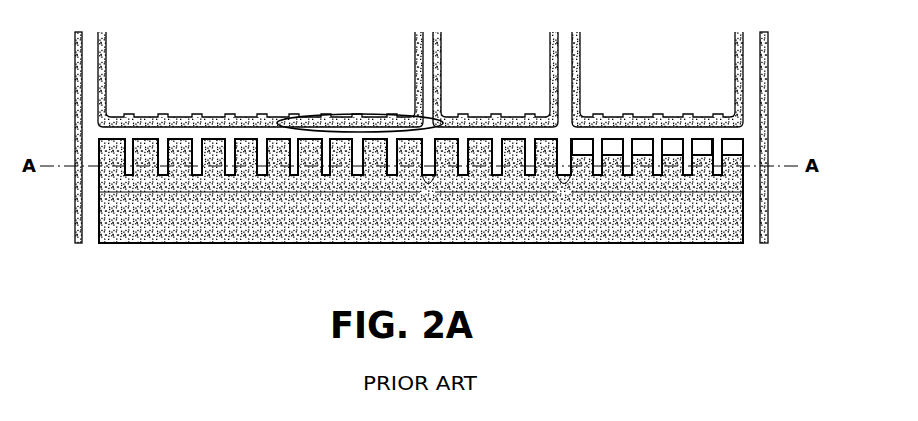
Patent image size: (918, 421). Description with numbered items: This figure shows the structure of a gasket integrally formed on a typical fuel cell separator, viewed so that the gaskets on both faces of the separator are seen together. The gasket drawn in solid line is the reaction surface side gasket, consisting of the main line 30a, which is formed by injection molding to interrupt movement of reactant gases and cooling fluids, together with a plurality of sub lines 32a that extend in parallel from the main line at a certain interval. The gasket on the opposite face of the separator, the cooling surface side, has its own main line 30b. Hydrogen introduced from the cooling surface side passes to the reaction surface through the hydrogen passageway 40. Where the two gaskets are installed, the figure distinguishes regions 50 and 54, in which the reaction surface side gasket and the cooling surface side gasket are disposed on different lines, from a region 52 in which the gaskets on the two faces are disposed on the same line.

The reaction surface side main line 30a is at (375, 114).
The cooling surface side main line 30b is at (245, 153).
The hydrogen passageway 40 is at (643, 147).
The sub line 32a is at (464, 178).
The region where the gasket is disposed on different lines 50 is at (262, 192).
The region where the gasket is disposed on the same line 52 is at (498, 192).
The region where the gasket is disposed on different lines 54 is at (660, 191).